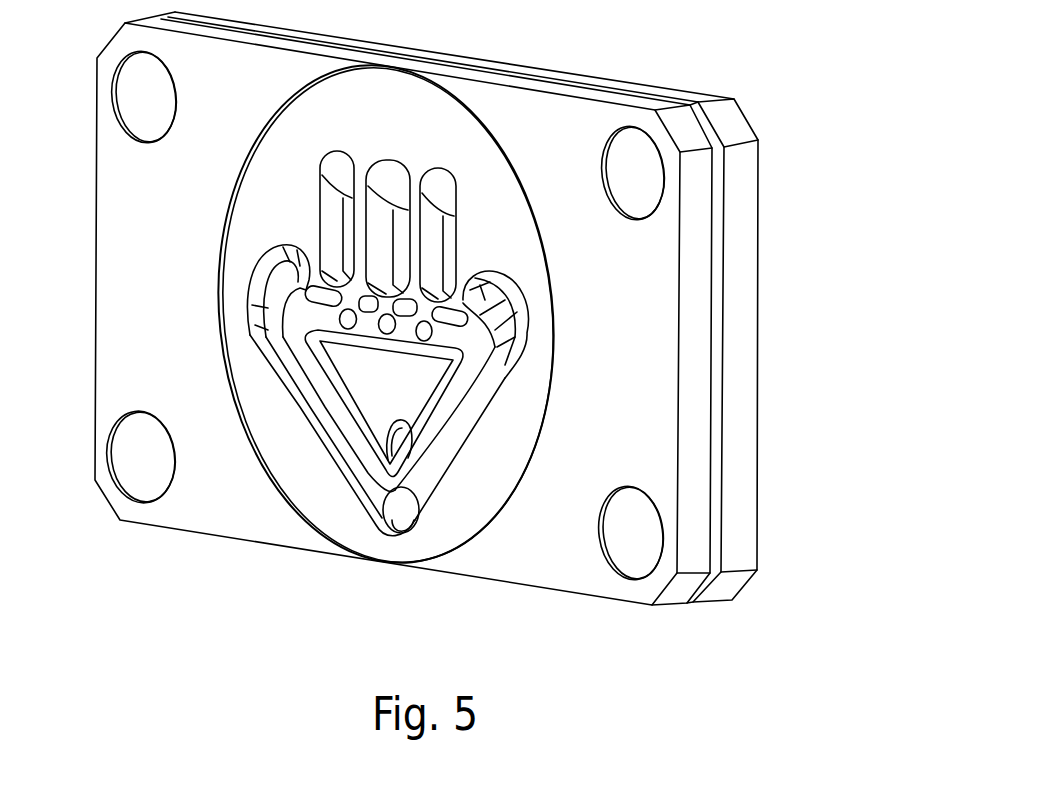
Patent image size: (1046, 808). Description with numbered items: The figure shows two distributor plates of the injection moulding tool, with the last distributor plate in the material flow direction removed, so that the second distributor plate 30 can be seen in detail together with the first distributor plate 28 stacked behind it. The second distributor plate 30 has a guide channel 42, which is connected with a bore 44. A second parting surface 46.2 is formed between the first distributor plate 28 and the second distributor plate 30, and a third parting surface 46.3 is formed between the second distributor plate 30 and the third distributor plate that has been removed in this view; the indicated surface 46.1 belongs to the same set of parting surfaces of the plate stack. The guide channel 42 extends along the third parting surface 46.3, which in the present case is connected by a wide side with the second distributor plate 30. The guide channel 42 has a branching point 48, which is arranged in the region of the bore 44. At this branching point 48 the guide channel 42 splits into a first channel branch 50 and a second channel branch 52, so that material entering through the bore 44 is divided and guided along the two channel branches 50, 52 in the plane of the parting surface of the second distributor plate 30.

The first distributor plate 28 is at (665, 92).
The second distributor plate 30 is at (567, 84).
The guide channel 42 is at (262, 340).
The bore 44 is at (403, 512).
The first layer 46.1 is at (750, 123).
The second parting surface 46.2 is at (712, 270).
The third parting surface 46.3 is at (654, 334).
The branching point 48 is at (363, 515).
The first channel branch 50 is at (323, 447).
The second channel branch 52 is at (440, 473).